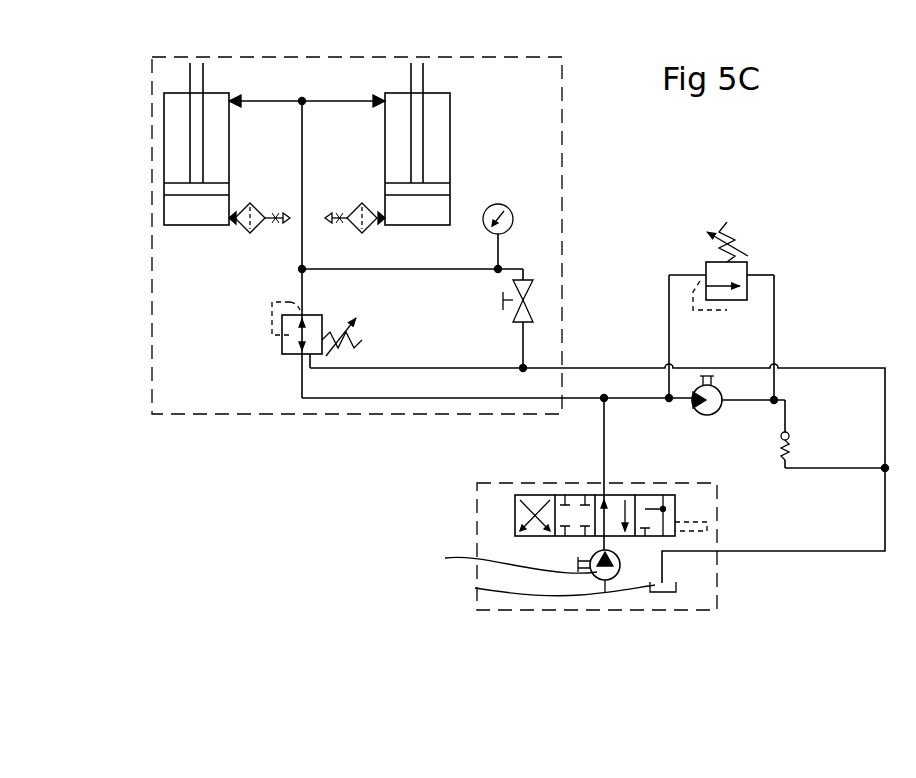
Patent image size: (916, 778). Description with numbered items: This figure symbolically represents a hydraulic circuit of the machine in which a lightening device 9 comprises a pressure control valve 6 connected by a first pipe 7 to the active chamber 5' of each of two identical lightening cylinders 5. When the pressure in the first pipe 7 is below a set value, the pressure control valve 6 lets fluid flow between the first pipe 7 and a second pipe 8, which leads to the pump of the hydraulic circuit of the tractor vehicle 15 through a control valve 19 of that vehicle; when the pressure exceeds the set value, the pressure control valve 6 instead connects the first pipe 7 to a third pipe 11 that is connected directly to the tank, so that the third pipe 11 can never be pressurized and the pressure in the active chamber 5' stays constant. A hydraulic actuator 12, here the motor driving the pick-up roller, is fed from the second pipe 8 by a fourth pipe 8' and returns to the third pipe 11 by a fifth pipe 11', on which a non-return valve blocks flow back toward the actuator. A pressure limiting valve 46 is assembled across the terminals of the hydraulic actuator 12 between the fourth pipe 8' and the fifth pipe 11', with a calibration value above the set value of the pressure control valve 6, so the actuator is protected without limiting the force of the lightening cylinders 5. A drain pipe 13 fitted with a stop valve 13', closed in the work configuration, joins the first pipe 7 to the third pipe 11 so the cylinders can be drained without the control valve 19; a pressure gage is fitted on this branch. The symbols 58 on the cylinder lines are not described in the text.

The lightening cylinder 5 is at (306, 162).
The active chamber 5' is at (161, 144).
The pressure control valve 6 is at (268, 347).
The first pipe 7 is at (302, 163).
The second pipe 8 is at (453, 450).
The fourth pipe 8' is at (647, 433).
The lightening device 9 is at (150, 375).
The third pipe 11 is at (599, 412).
The fifth pipe 11' is at (833, 434).
The hydraulic actuator 12 is at (716, 393).
The drain pipe 13 is at (571, 339).
The stop valve 13' is at (578, 257).
The tractor vehicle 15 is at (477, 530).
The control valve 19 is at (712, 522).
The pressure limiting valve 46 is at (755, 215).
The filter check valves 58 is at (338, 232).